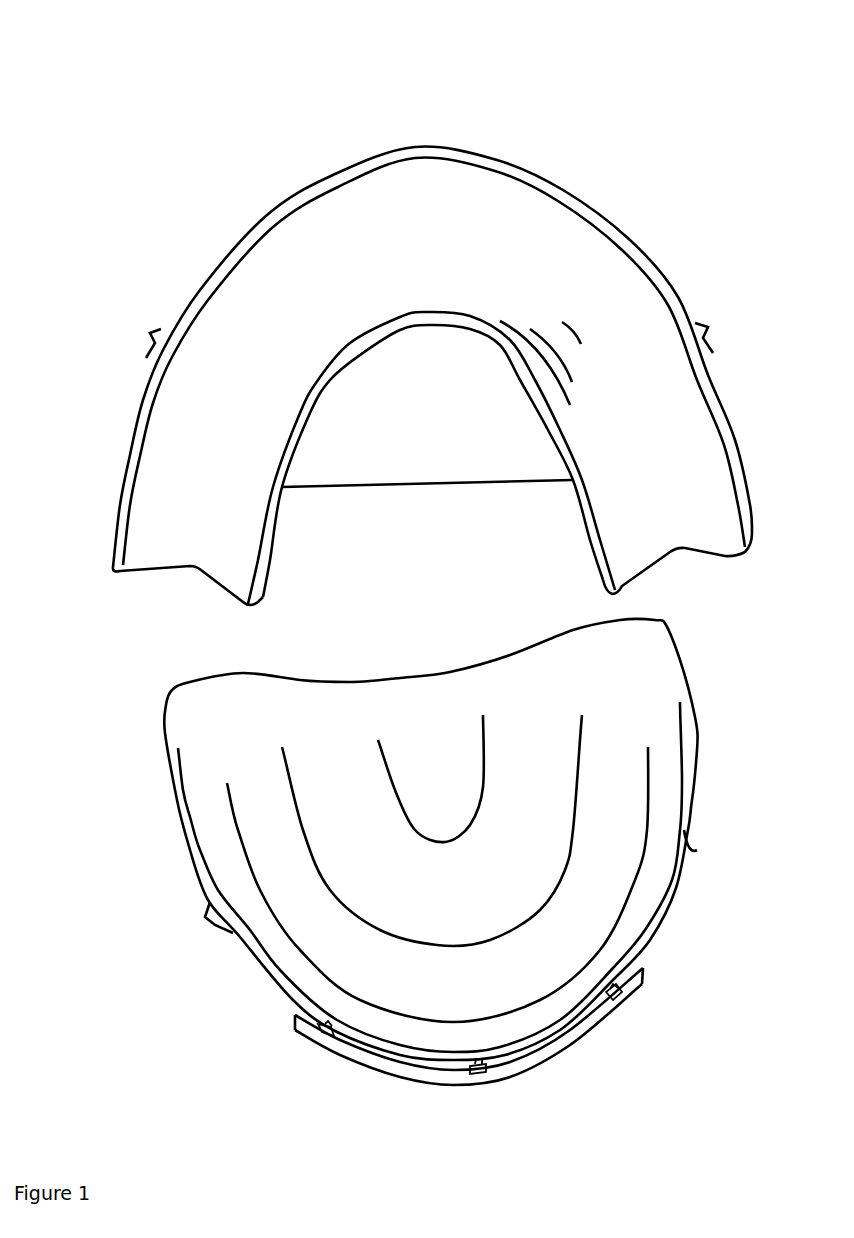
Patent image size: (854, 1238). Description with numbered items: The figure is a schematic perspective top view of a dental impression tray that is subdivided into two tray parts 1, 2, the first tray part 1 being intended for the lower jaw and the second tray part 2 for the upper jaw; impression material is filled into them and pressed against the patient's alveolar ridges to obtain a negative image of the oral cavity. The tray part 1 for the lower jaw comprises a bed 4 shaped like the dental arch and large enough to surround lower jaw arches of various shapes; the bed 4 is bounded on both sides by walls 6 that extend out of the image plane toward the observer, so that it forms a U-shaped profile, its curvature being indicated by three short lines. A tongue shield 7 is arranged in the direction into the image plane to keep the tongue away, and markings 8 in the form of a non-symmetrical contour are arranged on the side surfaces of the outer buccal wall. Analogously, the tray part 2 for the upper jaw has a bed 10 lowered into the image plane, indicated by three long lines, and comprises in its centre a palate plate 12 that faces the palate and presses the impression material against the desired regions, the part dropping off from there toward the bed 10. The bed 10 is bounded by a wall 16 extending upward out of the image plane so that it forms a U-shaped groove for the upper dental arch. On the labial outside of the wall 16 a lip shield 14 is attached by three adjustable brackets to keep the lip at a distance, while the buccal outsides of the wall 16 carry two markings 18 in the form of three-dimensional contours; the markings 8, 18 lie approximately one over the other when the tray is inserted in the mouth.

The first tray part 1 is at (353, 100).
The second tray part 2 is at (201, 1010).
The bed 4 is at (487, 283).
The walls 6 is at (346, 336).
The tongue shield 7 is at (432, 406).
The markings 8 is at (144, 346).
The bed 10 is at (206, 831).
The palate plate 12 is at (434, 819).
The lip shield 14 is at (453, 1090).
The wall 16 is at (674, 889).
The markings 18 is at (211, 926).